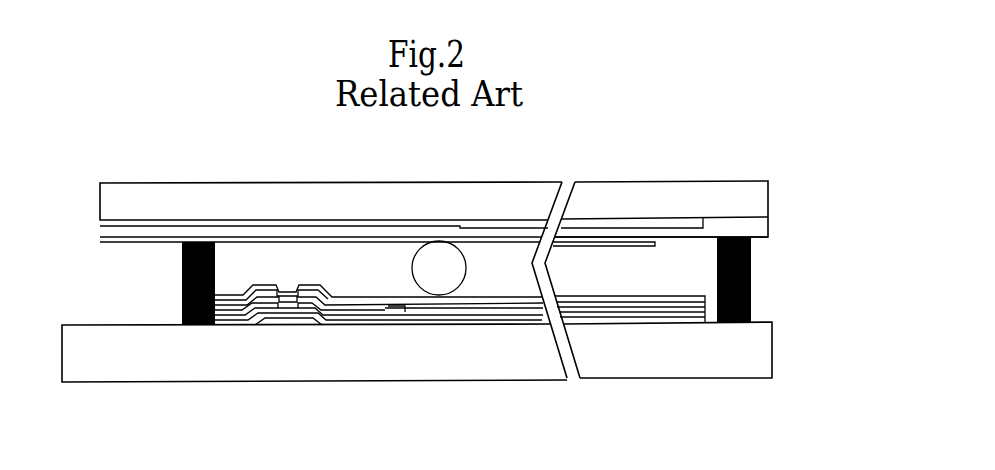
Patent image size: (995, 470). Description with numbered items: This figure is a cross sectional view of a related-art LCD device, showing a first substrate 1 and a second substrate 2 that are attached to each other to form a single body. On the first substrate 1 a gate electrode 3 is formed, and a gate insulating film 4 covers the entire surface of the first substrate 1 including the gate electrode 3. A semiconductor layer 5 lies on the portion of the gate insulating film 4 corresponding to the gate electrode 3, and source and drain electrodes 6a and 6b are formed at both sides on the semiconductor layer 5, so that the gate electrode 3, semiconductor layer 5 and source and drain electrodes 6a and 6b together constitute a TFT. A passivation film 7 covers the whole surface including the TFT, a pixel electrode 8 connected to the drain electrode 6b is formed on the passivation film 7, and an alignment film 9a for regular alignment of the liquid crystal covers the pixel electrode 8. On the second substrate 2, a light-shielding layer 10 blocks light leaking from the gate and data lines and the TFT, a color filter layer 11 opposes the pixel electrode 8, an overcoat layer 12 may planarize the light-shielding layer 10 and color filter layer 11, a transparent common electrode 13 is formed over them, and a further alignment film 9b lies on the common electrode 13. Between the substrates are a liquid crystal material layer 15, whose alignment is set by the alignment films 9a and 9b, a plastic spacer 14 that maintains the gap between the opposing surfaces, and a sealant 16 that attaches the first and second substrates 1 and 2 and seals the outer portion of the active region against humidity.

The first substrate 1 is at (752, 356).
The second substrate 2 is at (764, 198).
The gate electrode 3 is at (302, 323).
The gate insulating film 4 is at (268, 311).
The semiconductor layer 5 is at (337, 315).
The source electrode 6a is at (243, 312).
The drain electrode 6b is at (373, 311).
The passivation film 7 is at (437, 313).
The pixel electrode 8 is at (392, 312).
The alignment film 9a is at (667, 302).
The alignment film 9b is at (587, 247).
The light-shielding layer 10 is at (112, 222).
The color filter layer 11 is at (693, 218).
The overcoat layer 12 is at (764, 228).
The common electrode 13 is at (107, 243).
The spacer 14 is at (442, 260).
The liquid crystal material layer 15 is at (318, 255).
The sealant 16 is at (752, 288).